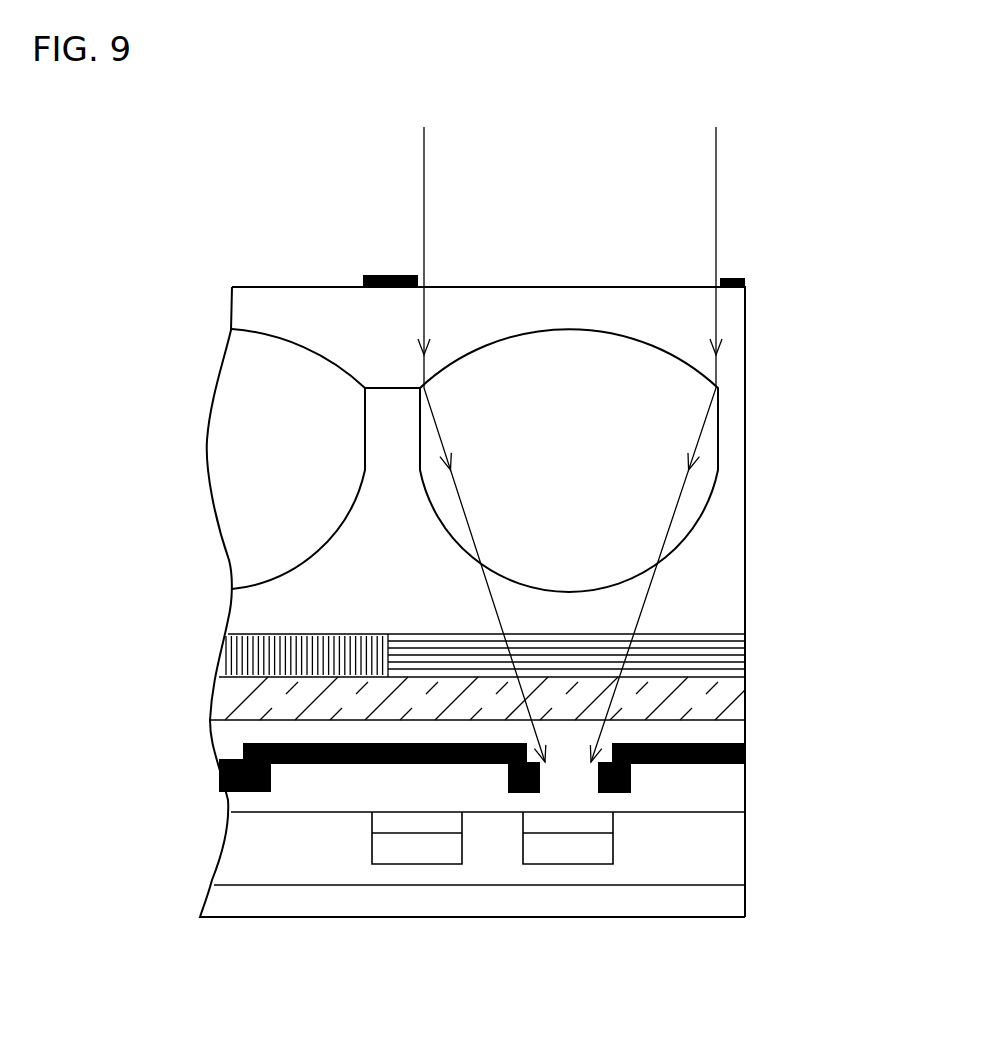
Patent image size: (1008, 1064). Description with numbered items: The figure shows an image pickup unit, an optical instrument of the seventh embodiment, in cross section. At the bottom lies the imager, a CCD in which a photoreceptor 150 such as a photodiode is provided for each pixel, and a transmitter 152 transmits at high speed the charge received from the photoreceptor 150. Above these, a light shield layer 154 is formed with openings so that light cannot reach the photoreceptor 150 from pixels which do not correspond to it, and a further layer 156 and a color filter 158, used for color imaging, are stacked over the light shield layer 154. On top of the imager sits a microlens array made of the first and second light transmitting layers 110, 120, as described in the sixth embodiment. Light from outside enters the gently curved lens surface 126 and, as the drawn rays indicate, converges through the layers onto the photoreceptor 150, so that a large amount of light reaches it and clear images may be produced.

The first light transmitting layer 110 is at (707, 587).
The second light transmitting layer 120 is at (733, 420).
The lens surface 126 is at (565, 329).
The photoreceptor 150 is at (577, 876).
The transmitter 152 is at (422, 876).
The light shield layer 154 is at (745, 753).
The insulating layer 156 is at (727, 700).
The color filter 158 is at (733, 662).